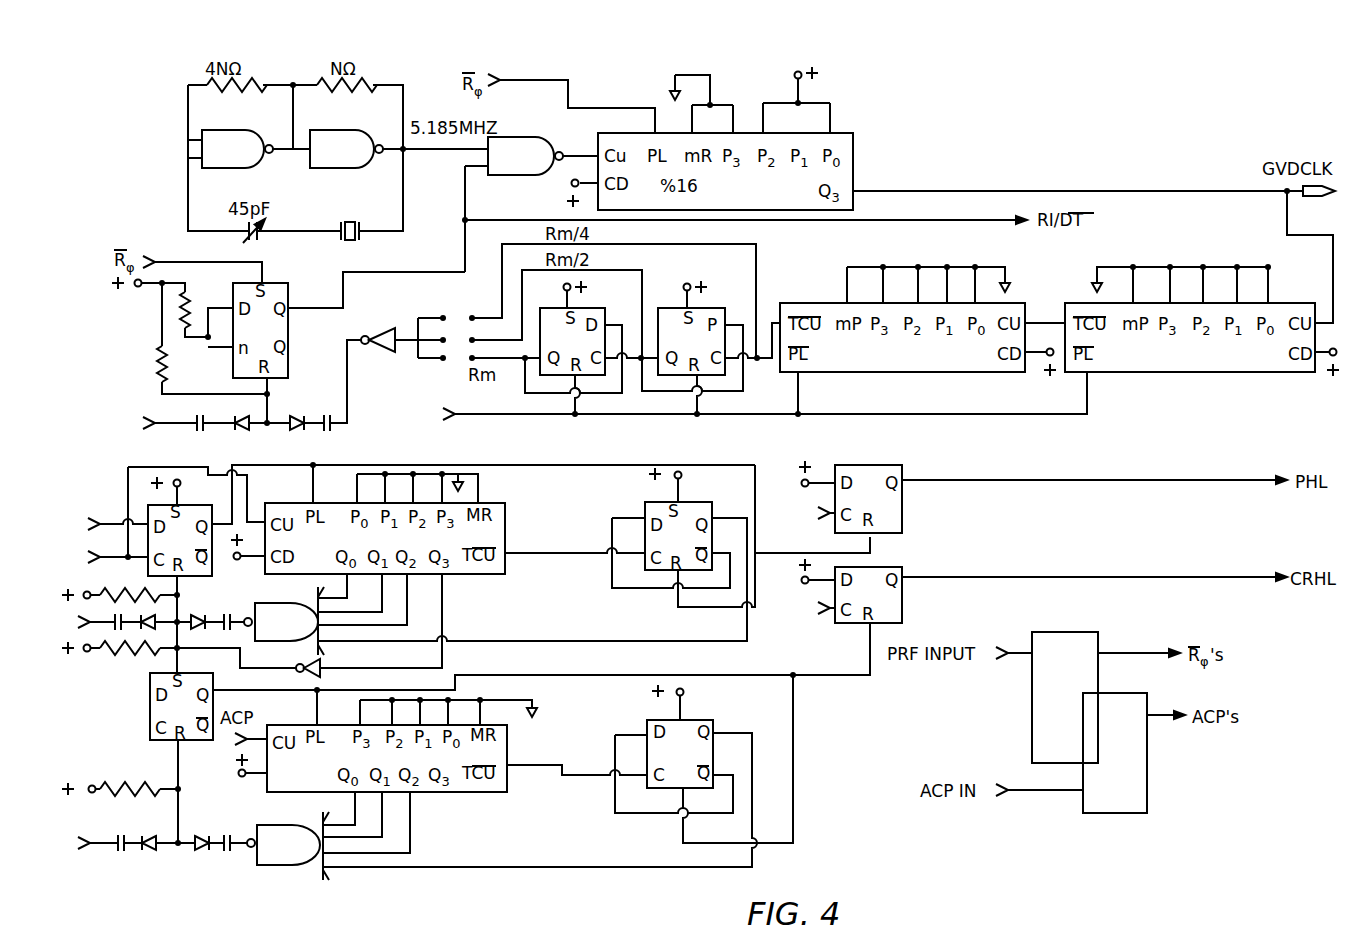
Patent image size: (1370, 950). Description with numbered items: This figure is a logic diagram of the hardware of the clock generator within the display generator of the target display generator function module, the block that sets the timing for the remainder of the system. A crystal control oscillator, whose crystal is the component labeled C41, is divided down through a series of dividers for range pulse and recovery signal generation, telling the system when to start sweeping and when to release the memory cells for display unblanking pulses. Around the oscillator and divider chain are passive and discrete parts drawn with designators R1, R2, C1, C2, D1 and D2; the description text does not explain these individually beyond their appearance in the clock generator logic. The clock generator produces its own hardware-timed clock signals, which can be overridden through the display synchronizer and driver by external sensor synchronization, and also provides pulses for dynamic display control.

The resistor R1 is at (198, 307).
The resistor R2 is at (174, 364).
The capacitor C1 is at (329, 412).
The capacitor C2 is at (201, 412).
The diode D1 is at (296, 412).
The diode D2 is at (242, 412).
The crystal C41 is at (350, 219).